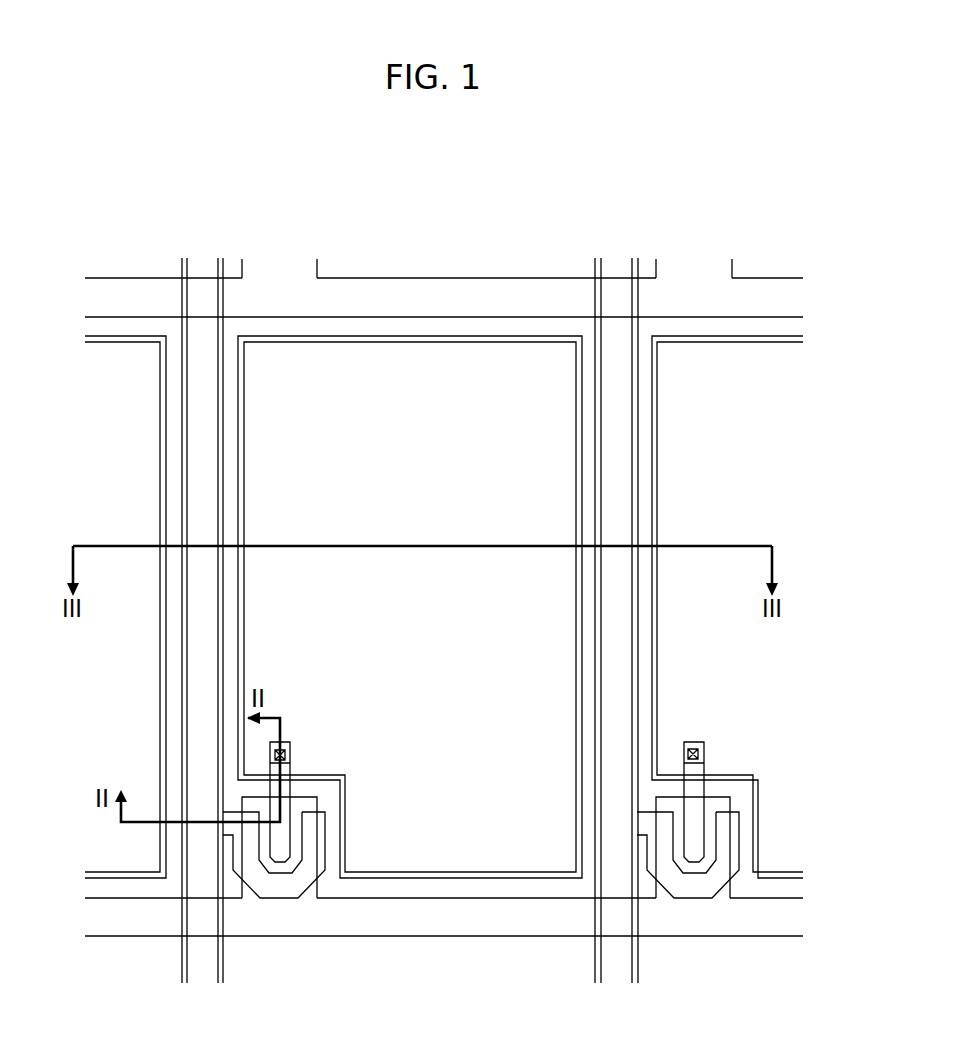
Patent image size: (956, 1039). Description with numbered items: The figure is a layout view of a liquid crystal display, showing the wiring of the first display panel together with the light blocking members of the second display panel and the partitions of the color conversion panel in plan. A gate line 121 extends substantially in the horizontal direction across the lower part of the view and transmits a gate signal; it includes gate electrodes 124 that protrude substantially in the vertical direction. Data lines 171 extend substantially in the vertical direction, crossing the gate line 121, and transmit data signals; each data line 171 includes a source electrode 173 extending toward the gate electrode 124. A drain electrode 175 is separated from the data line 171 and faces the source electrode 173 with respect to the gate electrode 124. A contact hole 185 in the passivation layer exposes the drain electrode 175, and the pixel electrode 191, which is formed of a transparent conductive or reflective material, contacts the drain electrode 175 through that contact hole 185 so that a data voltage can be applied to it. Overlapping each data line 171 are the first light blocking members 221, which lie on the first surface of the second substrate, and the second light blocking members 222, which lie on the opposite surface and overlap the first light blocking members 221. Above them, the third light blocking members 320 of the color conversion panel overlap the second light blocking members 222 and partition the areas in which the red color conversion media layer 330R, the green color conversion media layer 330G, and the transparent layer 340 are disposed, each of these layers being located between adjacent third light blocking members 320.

The gate line 121 is at (478, 899).
The gate electrode 124 is at (317, 890).
The data line 171 is at (218, 725).
The source electrode 173 is at (283, 900).
The drain electrode 175 is at (290, 762).
The contact hole 185 is at (290, 750).
The pixel electrode 191 is at (243, 647).
The first light blocking member 221 is at (182, 397).
The second light blocking member 222 is at (223, 368).
The third light blocking member 320 is at (162, 483).
The red color conversion media layer 330R is at (94, 455).
The green color conversion media layer 330G is at (448, 455).
The transparent layer 340 is at (713, 455).